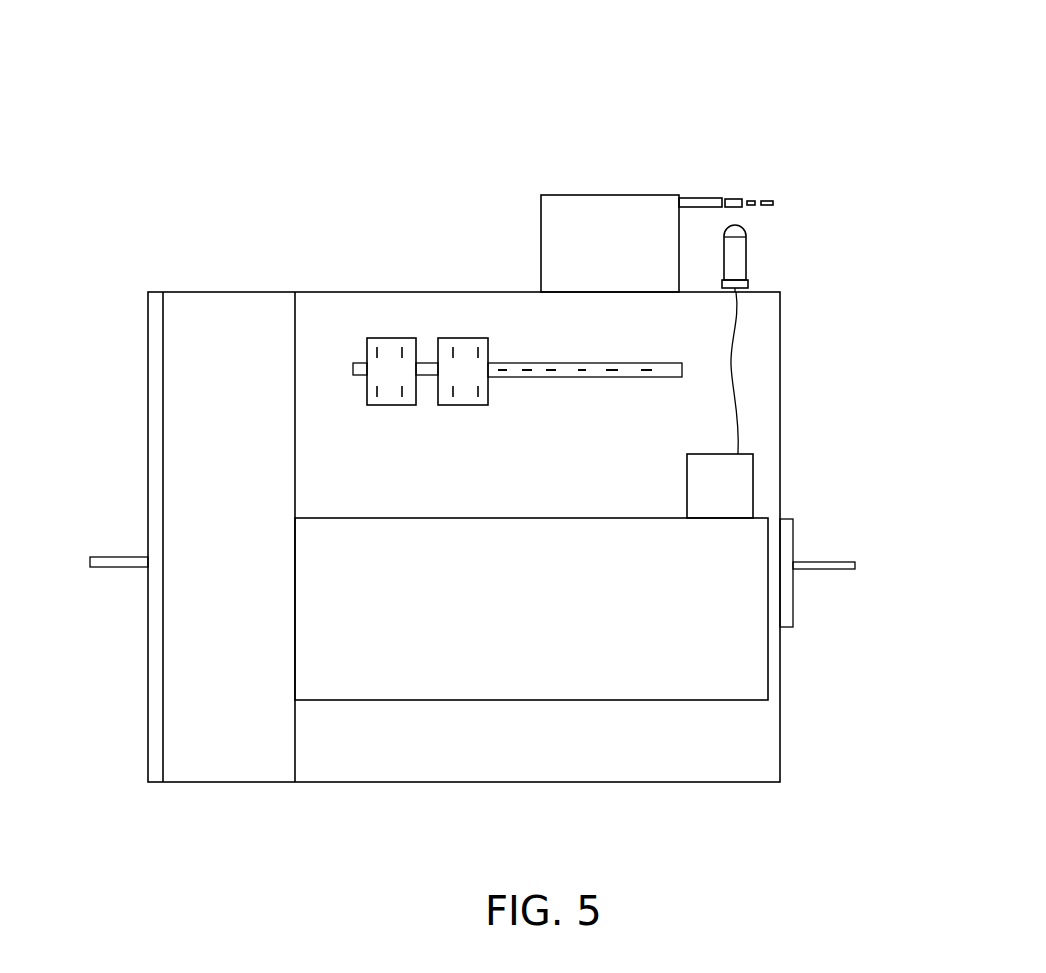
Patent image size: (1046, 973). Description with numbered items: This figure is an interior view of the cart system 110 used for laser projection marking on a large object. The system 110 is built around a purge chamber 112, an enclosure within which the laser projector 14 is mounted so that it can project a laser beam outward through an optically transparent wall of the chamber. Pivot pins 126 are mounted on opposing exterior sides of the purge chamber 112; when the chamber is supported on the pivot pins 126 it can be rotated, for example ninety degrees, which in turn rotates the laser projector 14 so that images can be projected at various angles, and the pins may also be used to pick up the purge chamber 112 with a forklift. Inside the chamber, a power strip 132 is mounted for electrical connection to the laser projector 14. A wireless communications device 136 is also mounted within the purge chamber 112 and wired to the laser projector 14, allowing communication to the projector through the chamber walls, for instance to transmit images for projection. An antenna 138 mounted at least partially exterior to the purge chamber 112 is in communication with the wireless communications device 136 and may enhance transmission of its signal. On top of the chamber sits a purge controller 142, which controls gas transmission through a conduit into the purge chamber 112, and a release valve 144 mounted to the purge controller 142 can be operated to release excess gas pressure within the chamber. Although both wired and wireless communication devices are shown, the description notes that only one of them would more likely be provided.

The cart system 110 is at (712, 86).
The purge chamber 112 is at (508, 747).
The laser projector 14 is at (743, 650).
The pivot pin 126 is at (90, 557).
The power strip 132 is at (388, 363).
The wireless communications device 136 is at (755, 468).
The antenna 138 is at (747, 256).
The purge controller 142 is at (578, 193).
The release valve 144 is at (797, 195).